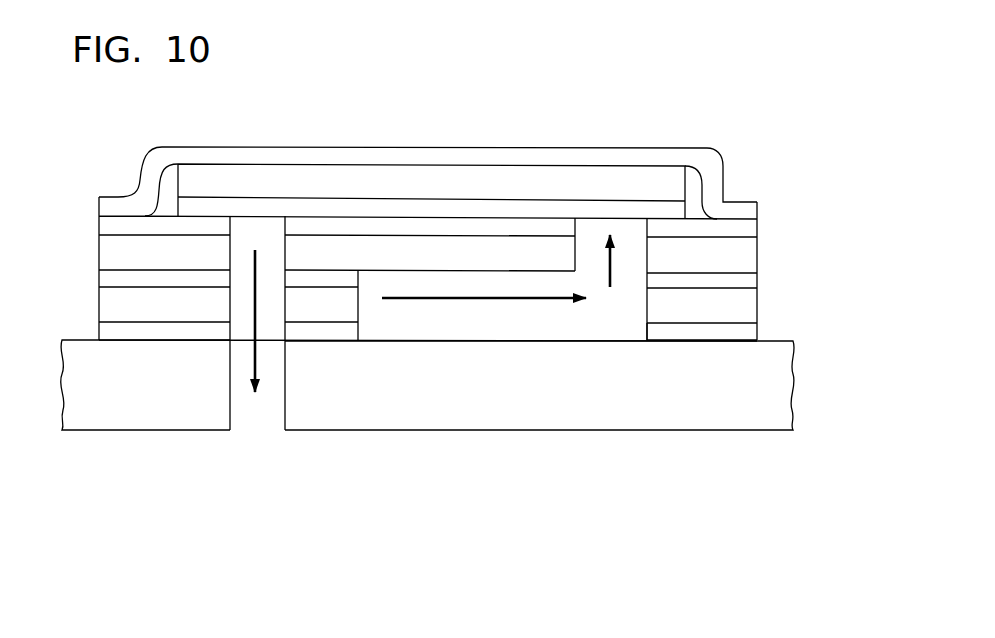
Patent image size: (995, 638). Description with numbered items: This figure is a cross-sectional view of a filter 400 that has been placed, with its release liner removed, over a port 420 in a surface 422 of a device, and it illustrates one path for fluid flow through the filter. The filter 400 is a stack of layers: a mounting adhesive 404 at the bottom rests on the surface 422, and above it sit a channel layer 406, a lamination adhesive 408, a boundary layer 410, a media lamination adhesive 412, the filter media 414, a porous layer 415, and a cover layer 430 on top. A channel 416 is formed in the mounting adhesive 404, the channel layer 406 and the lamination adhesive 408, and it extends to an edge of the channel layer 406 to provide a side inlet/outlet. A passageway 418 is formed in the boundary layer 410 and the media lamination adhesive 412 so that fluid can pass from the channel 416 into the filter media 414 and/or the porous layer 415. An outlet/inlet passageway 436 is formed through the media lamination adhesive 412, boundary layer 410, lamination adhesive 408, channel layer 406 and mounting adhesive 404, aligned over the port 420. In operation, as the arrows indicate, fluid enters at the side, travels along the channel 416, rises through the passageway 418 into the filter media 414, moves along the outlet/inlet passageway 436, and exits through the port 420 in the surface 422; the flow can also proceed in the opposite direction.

The filter 400 is at (391, 130).
The cover layer 430 is at (650, 148).
The porous layer 415 is at (685, 183).
The filter media 414 is at (685, 213).
The media lamination adhesive 412 is at (758, 229).
The boundary layer 410 is at (758, 257).
The lamination adhesive 408 is at (758, 283).
The channel layer 406 is at (758, 310).
The mounting adhesive 404 is at (758, 336).
The outlet/inlet passageway 436 is at (248, 252).
The port 420 is at (245, 372).
The surface 422 is at (76, 338).
The channel 416 is at (495, 328).
The passageway 418 is at (587, 255).